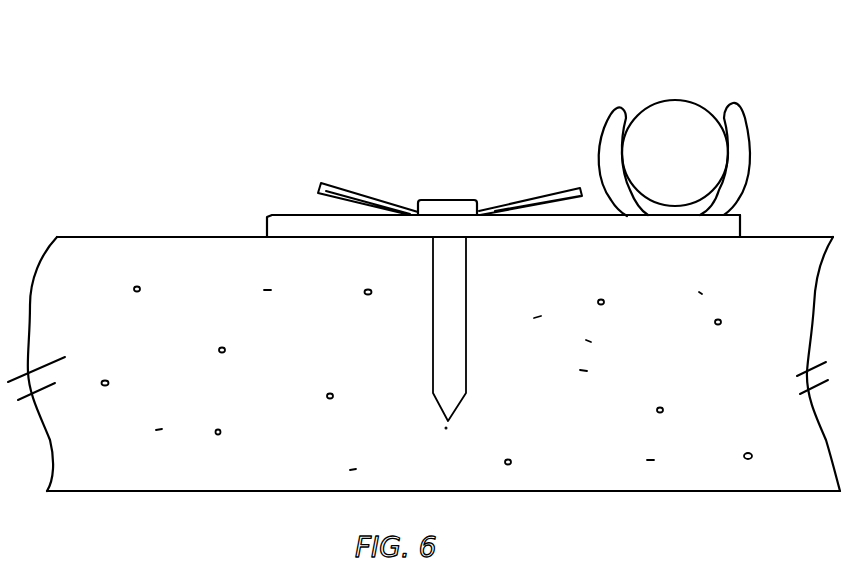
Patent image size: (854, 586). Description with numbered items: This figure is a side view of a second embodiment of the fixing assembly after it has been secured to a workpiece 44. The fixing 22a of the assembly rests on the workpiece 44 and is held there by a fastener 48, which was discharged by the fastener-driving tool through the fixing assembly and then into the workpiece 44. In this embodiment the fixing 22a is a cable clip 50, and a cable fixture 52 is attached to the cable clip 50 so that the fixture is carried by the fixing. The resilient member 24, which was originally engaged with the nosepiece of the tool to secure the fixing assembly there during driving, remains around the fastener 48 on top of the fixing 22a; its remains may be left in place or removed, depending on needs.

The workpiece 44 is at (197, 273).
The fixing 22a is at (283, 222).
The fastener 48 is at (445, 200).
The resilient member 24 is at (347, 185).
The cable clip 50 is at (735, 132).
The cable fixture 52 is at (665, 130).